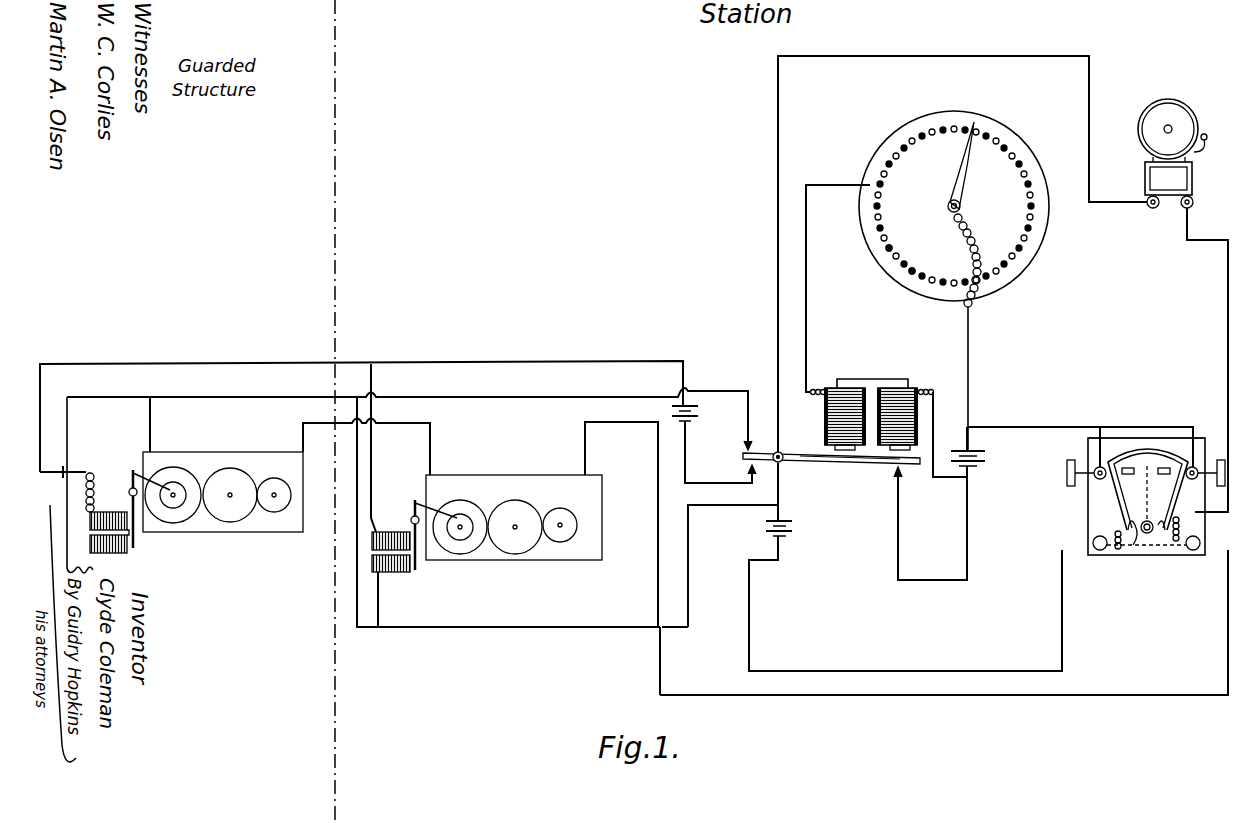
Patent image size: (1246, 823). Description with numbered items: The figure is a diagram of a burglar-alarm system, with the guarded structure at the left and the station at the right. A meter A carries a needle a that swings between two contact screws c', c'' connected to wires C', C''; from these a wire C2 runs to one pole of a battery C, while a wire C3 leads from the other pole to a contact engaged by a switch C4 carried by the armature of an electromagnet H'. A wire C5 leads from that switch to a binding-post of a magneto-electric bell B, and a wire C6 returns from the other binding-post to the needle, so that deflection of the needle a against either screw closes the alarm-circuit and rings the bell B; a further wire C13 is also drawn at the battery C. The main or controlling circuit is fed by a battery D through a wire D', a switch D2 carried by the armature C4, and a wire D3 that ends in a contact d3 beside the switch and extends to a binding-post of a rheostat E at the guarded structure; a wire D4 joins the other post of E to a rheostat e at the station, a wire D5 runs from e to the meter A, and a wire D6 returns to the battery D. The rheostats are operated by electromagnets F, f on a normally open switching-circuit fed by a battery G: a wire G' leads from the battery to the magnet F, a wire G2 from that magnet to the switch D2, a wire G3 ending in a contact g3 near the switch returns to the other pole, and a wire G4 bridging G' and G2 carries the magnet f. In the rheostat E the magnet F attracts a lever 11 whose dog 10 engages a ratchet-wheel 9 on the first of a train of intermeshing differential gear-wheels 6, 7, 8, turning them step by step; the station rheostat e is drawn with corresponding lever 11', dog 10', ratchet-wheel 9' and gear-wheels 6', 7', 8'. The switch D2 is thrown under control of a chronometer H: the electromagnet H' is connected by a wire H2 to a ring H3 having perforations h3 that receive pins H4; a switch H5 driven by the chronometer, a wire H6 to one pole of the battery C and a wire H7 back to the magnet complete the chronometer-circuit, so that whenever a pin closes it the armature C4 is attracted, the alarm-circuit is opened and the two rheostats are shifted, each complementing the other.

The wire G' is at (361, 405).
The wire G2 is at (68, 455).
The wire G4 is at (371, 481).
The wire D3 is at (236, 397).
The wire D4 is at (407, 423).
The wire D5 is at (656, 566).
The electromagnet F is at (108, 511).
The lever 11 is at (147, 513).
The dog 10 is at (151, 471).
The rheostat E is at (223, 492).
The gear-wheel 6 is at (173, 496).
The ratchet-wheel 9 is at (176, 493).
The gear-wheel 7 is at (230, 497).
The gear-wheel 8 is at (274, 496).
The electromagnet f is at (391, 536).
The armature lever 11' is at (432, 541).
The connecting rod 10' is at (436, 504).
The rheostat e is at (514, 517).
The wheel 6' is at (460, 527).
The crank disk 9' is at (461, 522).
The wheel 7' is at (515, 527).
The wheel 8' is at (560, 526).
The battery G is at (695, 411).
The wire G3 is at (688, 447).
The contact g3 is at (749, 471).
The contact d3 is at (747, 449).
The switch D2 is at (765, 452).
The switch C4 is at (849, 464).
The wire C3 is at (896, 470).
The wire C5 is at (778, 300).
The wire D' is at (875, 567).
The battery D is at (791, 530).
The wire D6 is at (922, 694).
The chronometer H is at (954, 206).
The perforations h3 is at (983, 272).
The ring H3 is at (882, 214).
The pins H4 is at (916, 271).
The switch H5 is at (972, 164).
The wire H6 is at (970, 349).
The wire H2 is at (806, 341).
The electromagnet H' is at (871, 402).
The wire H7 is at (932, 479).
The battery C is at (976, 460).
The wire C13 is at (968, 520).
The wire C2 is at (1033, 431).
The wire C' is at (1156, 428).
The wire C6 is at (1228, 300).
The magneto-electric bell B is at (1172, 153).
The meter A is at (1146, 496).
The needle a is at (1146, 481).
The contact screw c'' is at (1127, 443).
The contact screw c' is at (1163, 443).
The wire C'' is at (1128, 452).